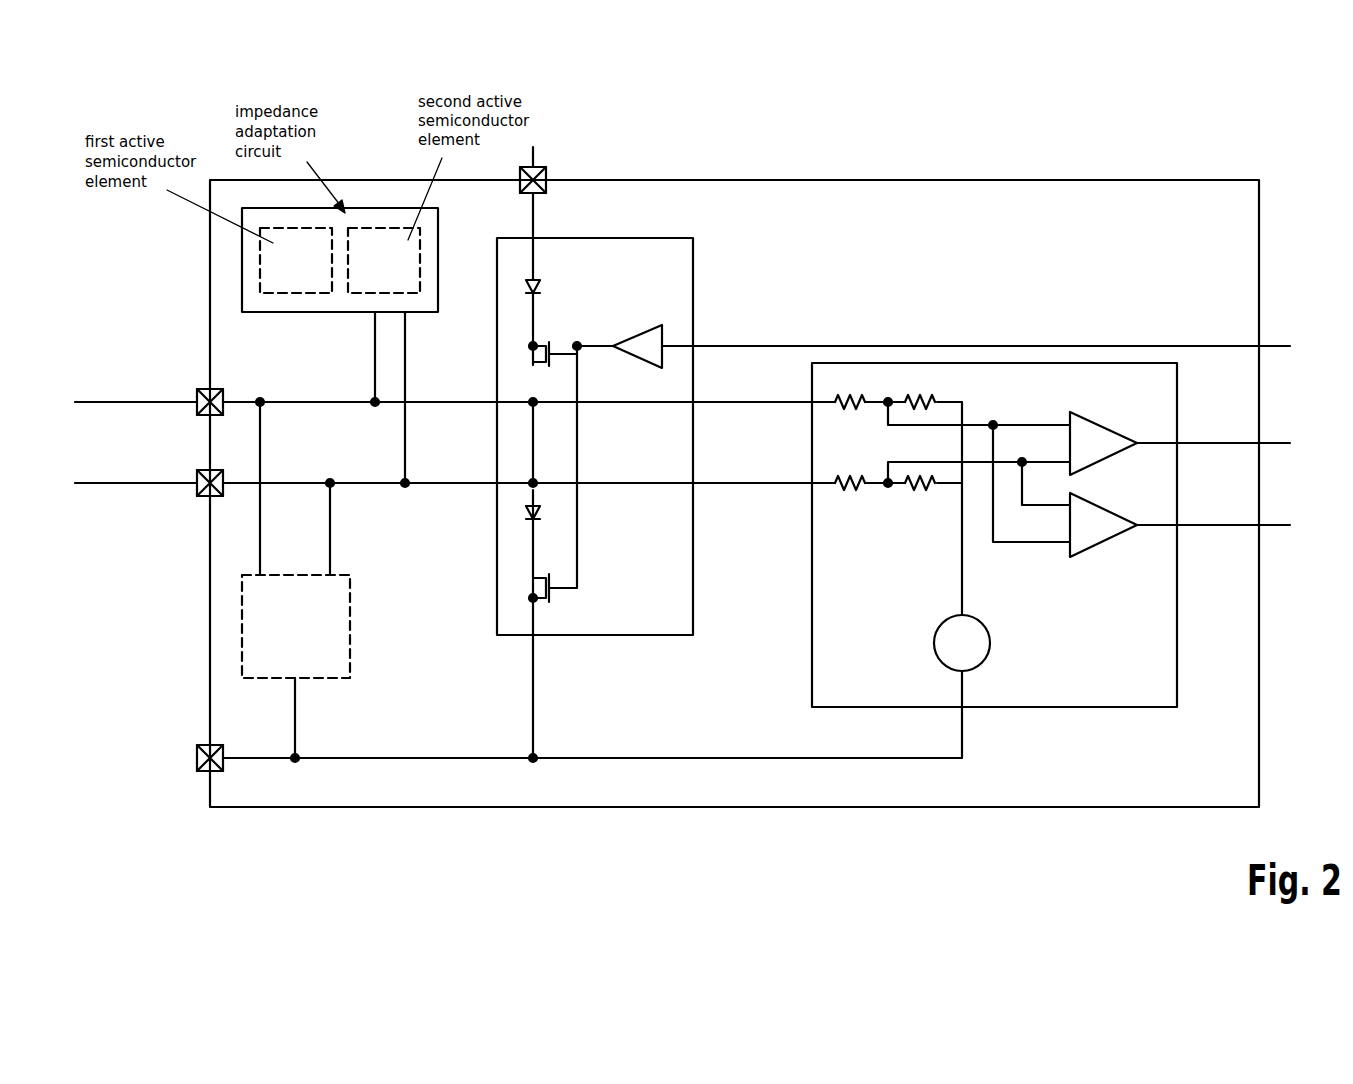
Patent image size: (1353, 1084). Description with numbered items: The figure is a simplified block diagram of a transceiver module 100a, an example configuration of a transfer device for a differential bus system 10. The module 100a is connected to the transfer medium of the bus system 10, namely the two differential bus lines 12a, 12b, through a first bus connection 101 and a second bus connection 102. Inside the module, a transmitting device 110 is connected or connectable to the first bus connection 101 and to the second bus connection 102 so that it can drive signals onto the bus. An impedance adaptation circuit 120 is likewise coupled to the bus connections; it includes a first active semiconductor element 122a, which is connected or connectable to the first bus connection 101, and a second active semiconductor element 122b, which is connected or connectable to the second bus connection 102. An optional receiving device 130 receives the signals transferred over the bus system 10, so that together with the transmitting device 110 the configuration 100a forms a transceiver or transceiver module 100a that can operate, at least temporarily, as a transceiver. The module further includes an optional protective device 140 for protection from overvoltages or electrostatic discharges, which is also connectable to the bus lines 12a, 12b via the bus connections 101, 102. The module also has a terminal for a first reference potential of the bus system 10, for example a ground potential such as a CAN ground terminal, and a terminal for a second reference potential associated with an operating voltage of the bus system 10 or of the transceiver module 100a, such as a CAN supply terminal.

The differential bus system 10 is at (93, 366).
The differential bus line 12a is at (137, 398).
The differential bus line 12b is at (137, 487).
The first bus connection 101 is at (200, 390).
The second bus connection 102 is at (202, 502).
The transceiver module 100a is at (1152, 152).
The transmitting device 110 is at (693, 292).
The impedance adaptation circuit 120 is at (340, 347).
The first active semiconductor element 122a is at (328, 278).
The second active semiconductor element 122b is at (415, 278).
The receiving device 130 is at (812, 587).
The protective device 140 is at (352, 628).